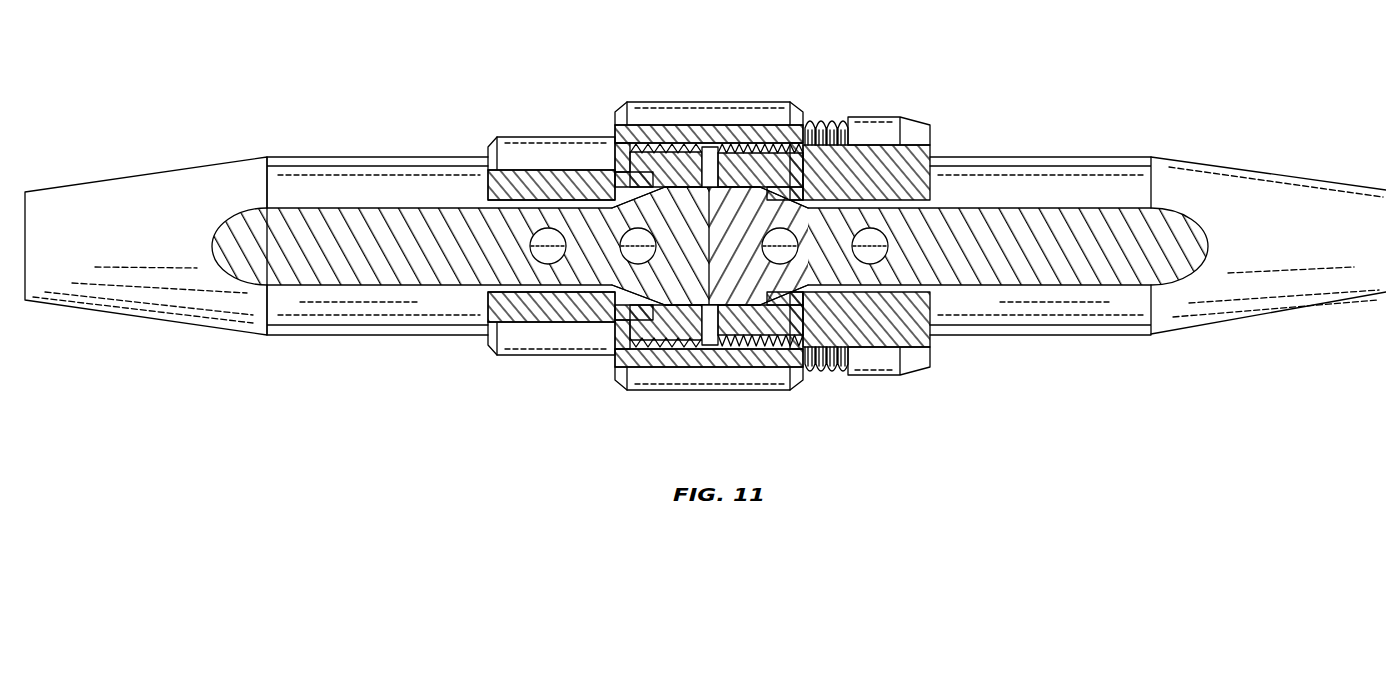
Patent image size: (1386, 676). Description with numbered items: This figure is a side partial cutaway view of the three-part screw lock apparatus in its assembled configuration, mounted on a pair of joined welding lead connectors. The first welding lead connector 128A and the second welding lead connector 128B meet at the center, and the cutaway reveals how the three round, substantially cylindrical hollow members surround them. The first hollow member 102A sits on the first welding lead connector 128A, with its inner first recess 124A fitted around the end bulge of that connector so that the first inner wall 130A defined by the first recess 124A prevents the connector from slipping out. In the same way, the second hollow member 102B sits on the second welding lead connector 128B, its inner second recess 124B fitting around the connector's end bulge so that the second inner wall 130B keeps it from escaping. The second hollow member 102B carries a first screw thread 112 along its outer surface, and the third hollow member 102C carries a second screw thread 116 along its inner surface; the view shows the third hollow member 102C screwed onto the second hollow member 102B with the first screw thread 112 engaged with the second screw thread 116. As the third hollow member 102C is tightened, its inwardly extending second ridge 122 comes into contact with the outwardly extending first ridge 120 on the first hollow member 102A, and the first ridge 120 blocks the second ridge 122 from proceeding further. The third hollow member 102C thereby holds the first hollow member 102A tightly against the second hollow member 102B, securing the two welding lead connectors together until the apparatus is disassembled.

The first hollow member 102A is at (548, 157).
The second hollow member 102B is at (908, 155).
The third hollow member 102C is at (718, 110).
The first screw thread 112 is at (824, 120).
The second screw thread 116 is at (690, 150).
The first ridge 120 is at (627, 303).
The second ridge 122 is at (613, 340).
The first recess 124A is at (655, 165).
The second recess 124B is at (767, 300).
The first welding lead connector 128A is at (327, 227).
The second welding lead connector 128B is at (1105, 235).
The first inner wall 130A is at (668, 342).
The second inner wall 130B is at (762, 150).